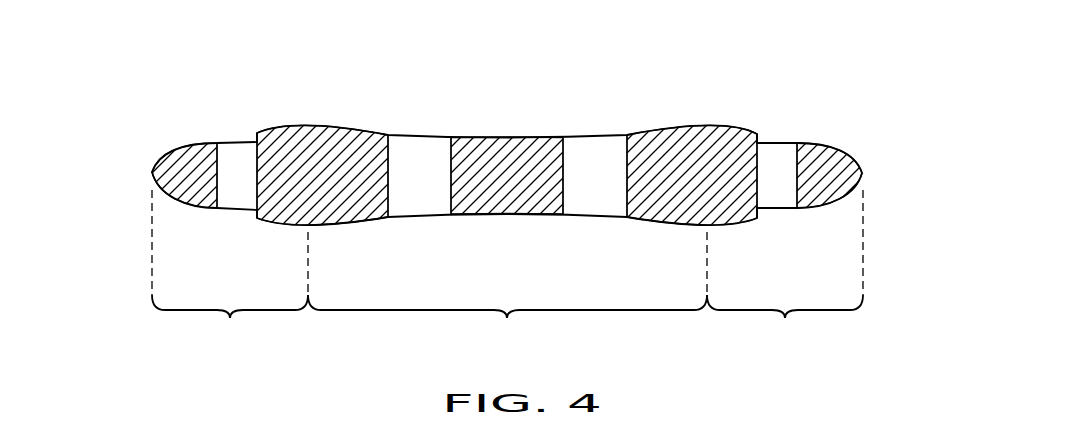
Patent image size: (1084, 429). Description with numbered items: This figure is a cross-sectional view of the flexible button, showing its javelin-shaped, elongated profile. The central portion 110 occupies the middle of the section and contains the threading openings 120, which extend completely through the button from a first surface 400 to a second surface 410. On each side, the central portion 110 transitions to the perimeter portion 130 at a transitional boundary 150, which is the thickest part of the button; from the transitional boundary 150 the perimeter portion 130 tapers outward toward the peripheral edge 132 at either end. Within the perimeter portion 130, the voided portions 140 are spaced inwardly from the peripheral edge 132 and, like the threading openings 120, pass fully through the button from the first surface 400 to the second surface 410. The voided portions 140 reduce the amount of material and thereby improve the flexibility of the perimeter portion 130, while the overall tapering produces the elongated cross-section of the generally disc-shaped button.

The first surface 400 is at (311, 84).
The second surface 410 is at (266, 244).
The central portion 110 is at (507, 321).
The threading openings 120 is at (593, 158).
The perimeter portion 130 is at (507, 269).
The peripheral edge 132 is at (151, 171).
The voided portions 140 is at (240, 165).
The transitional boundary 150 is at (708, 123).